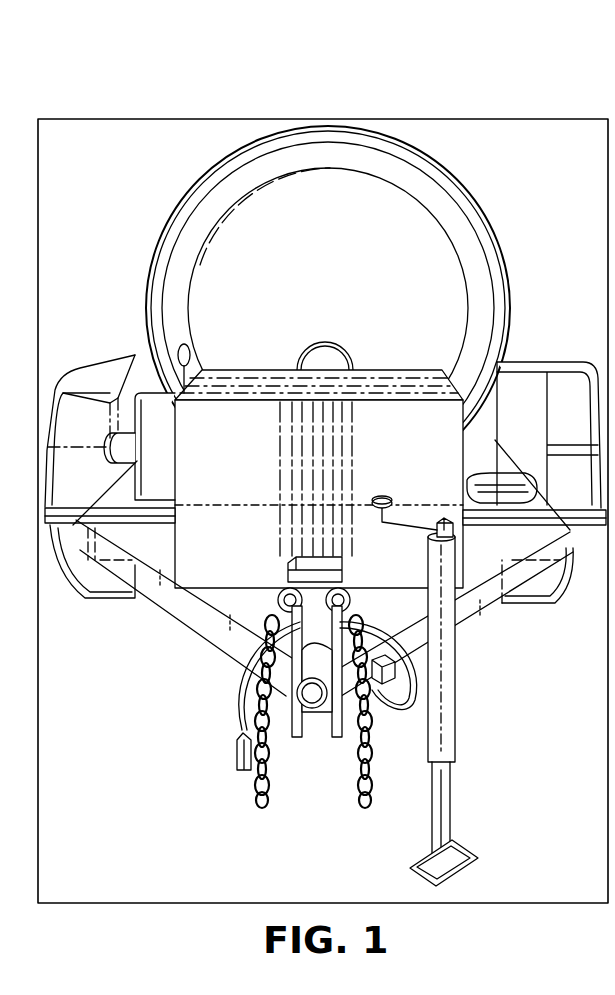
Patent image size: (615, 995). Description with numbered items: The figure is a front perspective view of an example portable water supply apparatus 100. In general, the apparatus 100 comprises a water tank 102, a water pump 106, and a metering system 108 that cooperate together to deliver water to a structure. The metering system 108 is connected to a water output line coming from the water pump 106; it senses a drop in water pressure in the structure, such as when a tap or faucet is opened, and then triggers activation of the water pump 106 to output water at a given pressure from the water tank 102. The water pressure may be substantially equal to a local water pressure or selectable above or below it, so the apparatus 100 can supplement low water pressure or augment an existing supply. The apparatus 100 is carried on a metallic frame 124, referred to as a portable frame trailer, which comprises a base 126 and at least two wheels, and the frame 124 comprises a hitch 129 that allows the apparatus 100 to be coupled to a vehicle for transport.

The portable water supply apparatus 100 is at (128, 113).
The water tank 102 is at (345, 243).
The water pump 106 is at (152, 480).
The metering system 108 is at (186, 343).
The metallic frame 124 is at (513, 403).
The base 126 is at (513, 548).
The hitch 129 is at (322, 657).